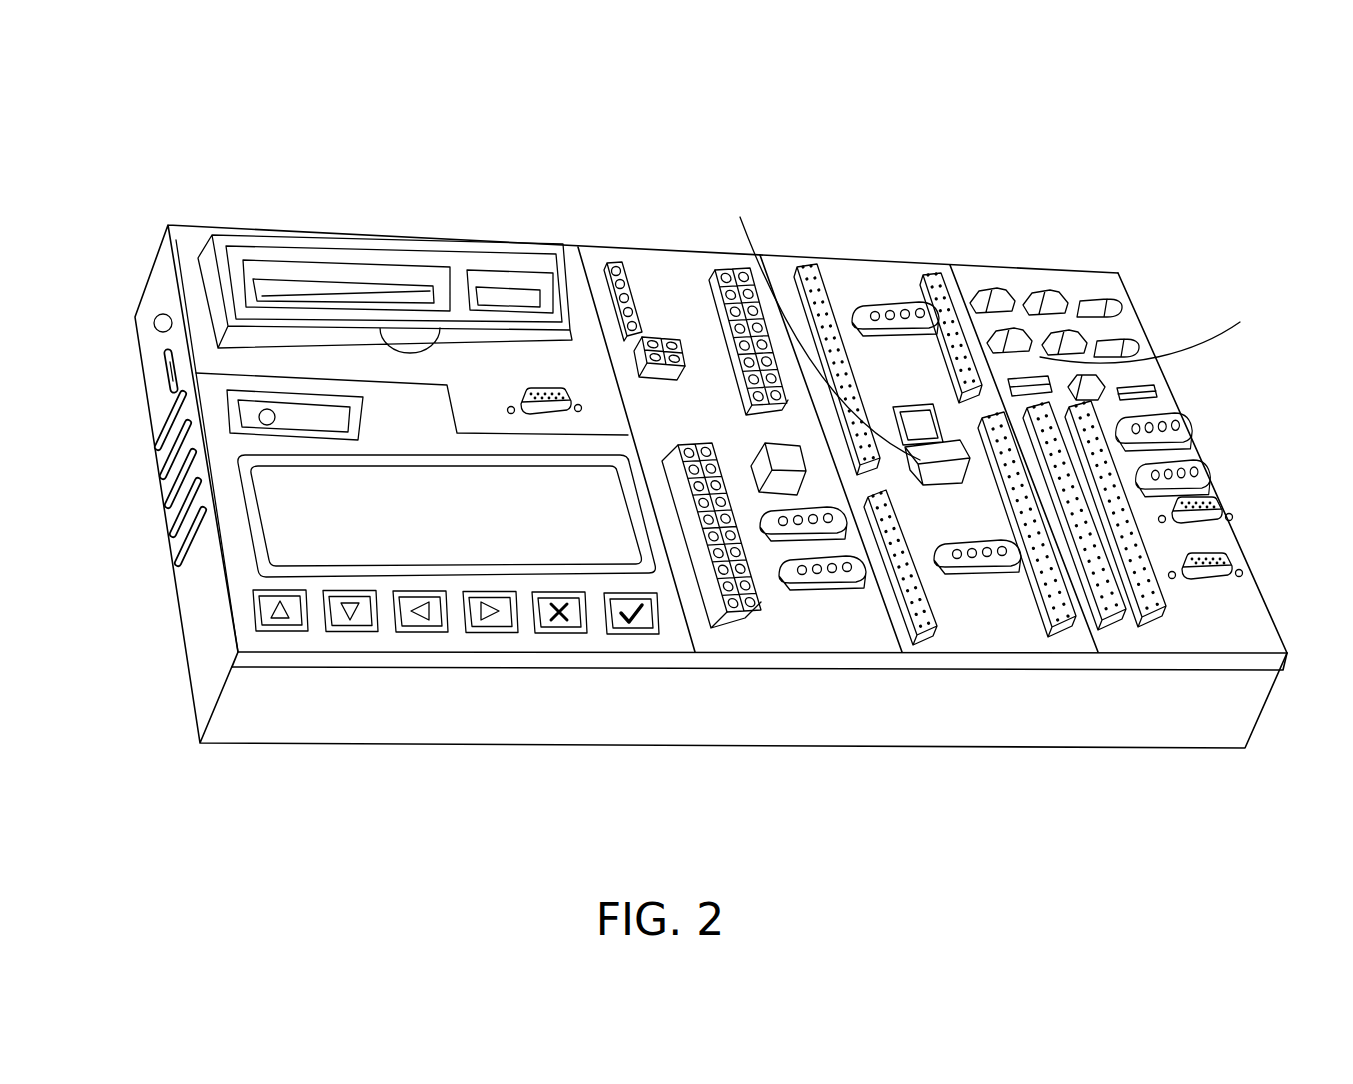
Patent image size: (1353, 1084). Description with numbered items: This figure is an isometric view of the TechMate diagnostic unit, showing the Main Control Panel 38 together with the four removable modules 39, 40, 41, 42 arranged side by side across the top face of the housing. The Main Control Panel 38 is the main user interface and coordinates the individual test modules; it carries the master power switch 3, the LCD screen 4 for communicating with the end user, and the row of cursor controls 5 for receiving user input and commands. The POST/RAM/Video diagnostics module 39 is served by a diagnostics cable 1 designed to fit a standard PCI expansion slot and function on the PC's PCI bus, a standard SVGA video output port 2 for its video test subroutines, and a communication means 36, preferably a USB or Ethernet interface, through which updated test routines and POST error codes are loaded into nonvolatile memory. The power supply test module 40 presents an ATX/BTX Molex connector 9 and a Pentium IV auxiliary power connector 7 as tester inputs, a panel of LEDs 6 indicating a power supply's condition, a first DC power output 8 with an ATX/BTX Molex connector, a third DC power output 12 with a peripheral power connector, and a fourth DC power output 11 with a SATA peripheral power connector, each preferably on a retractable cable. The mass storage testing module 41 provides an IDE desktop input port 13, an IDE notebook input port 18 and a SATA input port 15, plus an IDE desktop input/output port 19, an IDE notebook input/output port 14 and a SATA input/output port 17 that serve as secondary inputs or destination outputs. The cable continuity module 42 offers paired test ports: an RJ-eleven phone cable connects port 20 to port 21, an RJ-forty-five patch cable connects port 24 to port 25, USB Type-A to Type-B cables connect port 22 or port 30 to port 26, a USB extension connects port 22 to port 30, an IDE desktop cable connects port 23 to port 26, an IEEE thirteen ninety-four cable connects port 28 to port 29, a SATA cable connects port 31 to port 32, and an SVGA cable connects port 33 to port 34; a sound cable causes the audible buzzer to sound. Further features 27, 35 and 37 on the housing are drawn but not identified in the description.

The POST/RAM/Video diagnostics cable 1 is at (563, 262).
The SVGA video output port 2 is at (510, 403).
The master power switch 3 is at (235, 433).
The LCD screen 4 is at (257, 553).
The cursor controls 5 is at (490, 632).
The panel of LEDs 6 is at (625, 268).
The Pentium IV auxiliary power connector 7 is at (668, 338).
The first DC power output 8 is at (710, 600).
The ATX/BTX Molex connector 9 is at (711, 265).
The fourth DC power output 11 is at (782, 533).
The third DC power output 12 is at (860, 587).
The IDE standard desktop input port 13 is at (797, 277).
The IDE standard notebook input/output port 14 is at (930, 630).
The SATA standard input port 15 is at (862, 308).
The SATA standard input/output port 17 is at (977, 563).
The IDE standard notebook input port 18 is at (918, 290).
The IDE standard desktop input/output port 19 is at (1067, 630).
The RJ-11 test port 20 is at (997, 328).
The RJ-11 test port 21 is at (968, 297).
The USB Type-B test port 22 is at (1020, 393).
The IDE standard desktop cable test port 23 is at (1115, 617).
The RJ-45 test port 24 is at (1043, 332).
The RJ-45 test port 25 is at (1013, 292).
The USB Type-A test port 26 is at (1103, 383).
The connector 27 is at (1153, 610).
The IEEE-1394 test port 28 is at (1117, 296).
The IEEE-1394 test port 29 is at (1125, 340).
The USB Type-B test port 30 is at (1157, 390).
The SATA cable test port 31 is at (1180, 420).
The SATA cable test port 32 is at (1200, 463).
The SVGA cable test port 33 is at (1217, 507).
The SVGA cable test port 34 is at (1217, 587).
The hole 35 is at (155, 328).
The communication means 36 is at (160, 385).
The ventilation slots 37 is at (173, 450).
The Main Control Panel 38 is at (360, 652).
The POST/RAM/Video Diagnostics Module 39 is at (187, 238).
The Power Supply Test Module 40 is at (660, 250).
The Mass Storage Testing Module 41 is at (912, 263).
The Cable Continuity Test Module 42 is at (1087, 270).